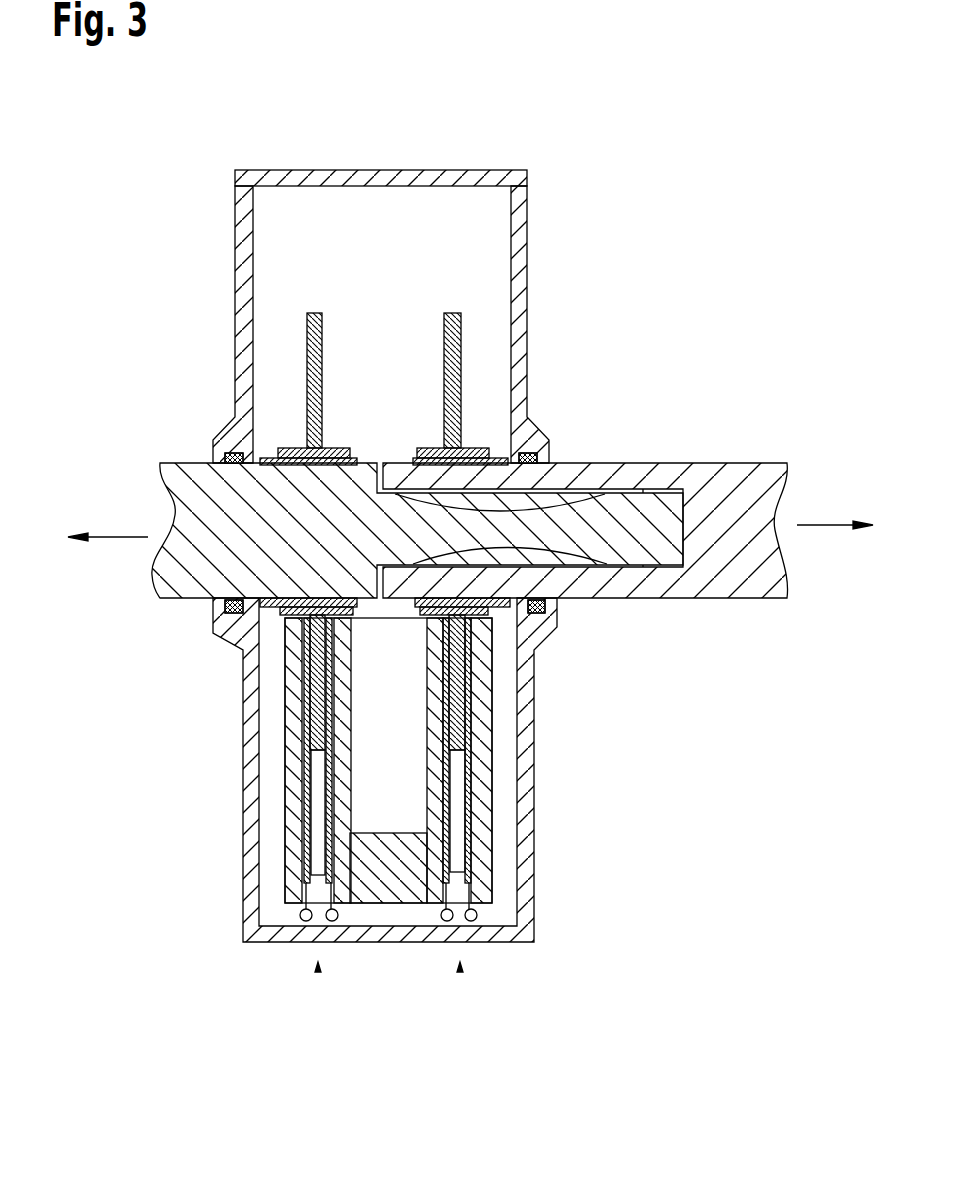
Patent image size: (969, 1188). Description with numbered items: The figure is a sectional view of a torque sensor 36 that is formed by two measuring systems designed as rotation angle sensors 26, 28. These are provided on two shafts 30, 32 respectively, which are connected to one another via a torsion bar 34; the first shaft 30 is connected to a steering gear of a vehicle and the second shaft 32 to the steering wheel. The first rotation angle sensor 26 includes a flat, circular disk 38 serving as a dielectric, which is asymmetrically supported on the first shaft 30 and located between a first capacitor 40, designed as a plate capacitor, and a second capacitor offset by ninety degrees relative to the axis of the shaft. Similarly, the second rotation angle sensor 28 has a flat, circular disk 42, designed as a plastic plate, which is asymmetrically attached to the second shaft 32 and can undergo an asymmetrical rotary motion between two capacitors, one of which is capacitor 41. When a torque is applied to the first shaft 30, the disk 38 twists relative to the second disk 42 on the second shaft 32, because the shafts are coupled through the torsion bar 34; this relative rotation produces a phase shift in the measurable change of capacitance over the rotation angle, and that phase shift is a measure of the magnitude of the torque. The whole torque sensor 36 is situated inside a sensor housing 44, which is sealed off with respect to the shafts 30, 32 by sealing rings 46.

The first rotation angle sensor 26 is at (318, 972).
The second rotation angle sensor 28 is at (460, 972).
The first shaft 30 is at (183, 573).
The second shaft 32 is at (758, 495).
The torsion bar 34 is at (575, 527).
The torque sensor 36 is at (565, 285).
The disk 38 is at (312, 312).
The first capacitor 40 is at (283, 832).
The capacitor 41 is at (497, 823).
The disk 42 is at (452, 312).
The sensor housing 44 is at (437, 178).
The sealing rings 46 is at (220, 455).